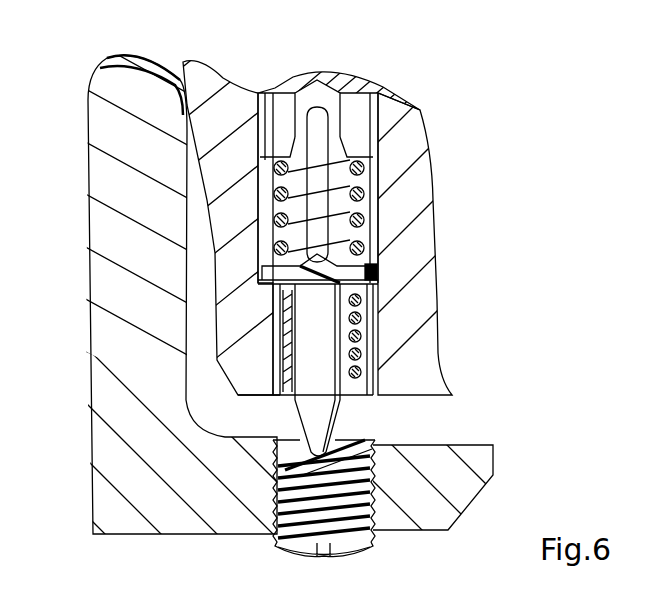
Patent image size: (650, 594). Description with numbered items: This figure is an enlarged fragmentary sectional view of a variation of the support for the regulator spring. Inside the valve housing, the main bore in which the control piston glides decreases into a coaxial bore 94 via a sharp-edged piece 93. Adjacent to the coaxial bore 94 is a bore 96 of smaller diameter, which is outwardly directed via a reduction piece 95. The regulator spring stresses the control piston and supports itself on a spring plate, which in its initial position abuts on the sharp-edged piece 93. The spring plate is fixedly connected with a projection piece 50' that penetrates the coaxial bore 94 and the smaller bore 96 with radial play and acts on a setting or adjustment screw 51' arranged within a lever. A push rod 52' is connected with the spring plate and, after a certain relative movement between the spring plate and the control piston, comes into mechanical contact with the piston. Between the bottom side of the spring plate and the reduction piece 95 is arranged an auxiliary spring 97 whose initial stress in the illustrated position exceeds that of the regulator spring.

The push rod 52' is at (405, 171).
The sharp-edged piece 93 is at (375, 302).
The auxiliary spring 97 is at (368, 330).
The reduction piece 95 is at (355, 393).
The bore 96 is at (270, 396).
The coaxial bore 94 is at (373, 352).
The projection piece 50' is at (297, 509).
The setting or adjustment screw 51' is at (357, 551).